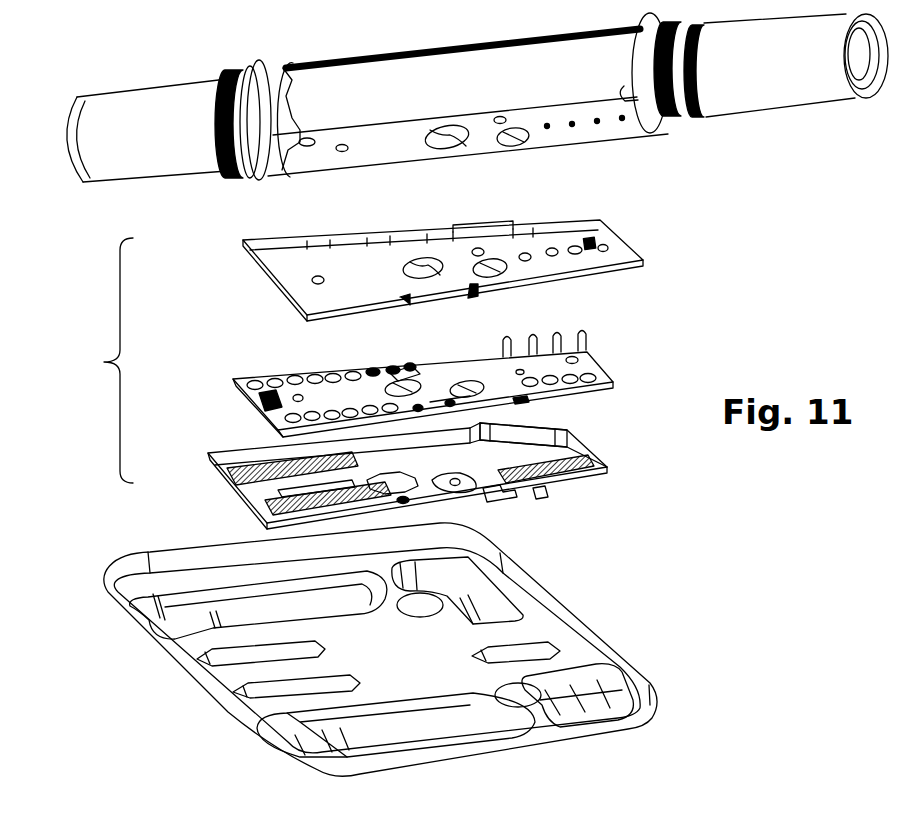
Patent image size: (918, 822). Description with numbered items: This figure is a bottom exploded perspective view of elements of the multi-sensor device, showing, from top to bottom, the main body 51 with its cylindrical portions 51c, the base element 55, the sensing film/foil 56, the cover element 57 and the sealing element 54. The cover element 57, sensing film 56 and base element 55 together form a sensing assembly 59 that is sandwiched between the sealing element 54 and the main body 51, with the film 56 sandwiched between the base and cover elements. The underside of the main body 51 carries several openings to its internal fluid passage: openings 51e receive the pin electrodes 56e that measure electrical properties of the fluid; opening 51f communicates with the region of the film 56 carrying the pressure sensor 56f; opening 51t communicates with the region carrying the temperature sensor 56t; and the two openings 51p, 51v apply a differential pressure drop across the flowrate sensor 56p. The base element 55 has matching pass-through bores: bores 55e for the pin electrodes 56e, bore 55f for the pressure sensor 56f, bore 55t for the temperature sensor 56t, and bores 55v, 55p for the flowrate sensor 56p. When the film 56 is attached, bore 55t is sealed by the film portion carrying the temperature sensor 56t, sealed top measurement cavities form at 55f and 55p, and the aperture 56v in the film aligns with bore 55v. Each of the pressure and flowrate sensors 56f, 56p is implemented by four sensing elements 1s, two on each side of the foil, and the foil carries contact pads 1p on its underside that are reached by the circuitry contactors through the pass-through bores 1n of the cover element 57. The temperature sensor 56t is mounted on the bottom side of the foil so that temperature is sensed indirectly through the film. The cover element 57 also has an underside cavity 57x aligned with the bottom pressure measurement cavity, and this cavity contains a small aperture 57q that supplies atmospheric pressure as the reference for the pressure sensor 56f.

The main body 51 is at (478, 88).
The cylindrical portion 51c is at (123, 100).
The opening 51t is at (505, 120).
The opening 51e is at (601, 125).
The opening 51f is at (520, 143).
The opening 51p is at (443, 136).
The opening 51v is at (342, 151).
The base element 55 is at (283, 290).
The pass-through bore 55t is at (482, 246).
The pass-through bore 55v is at (312, 279).
The pass-through bore 55p is at (420, 266).
The pass-through bore 55f is at (490, 266).
The pass-through bore 55e is at (599, 248).
The sensing film/foil 56 is at (268, 373).
The pin electrode 56e is at (562, 342).
The aperture 56v is at (297, 394).
The flowrate sensor 56p is at (392, 391).
The temperature sensor 56t is at (398, 371).
The pressure sensor 56f is at (470, 384).
The contact pad 1p is at (250, 385).
The sensing element 1s is at (474, 387).
The cover element 57 is at (208, 460).
The underside cavity 57x is at (560, 445).
The pass-through bore 1n is at (247, 485).
The aperture 57q is at (467, 481).
The sealing element 54 is at (127, 567).
The sensing assembly 59 is at (108, 362).